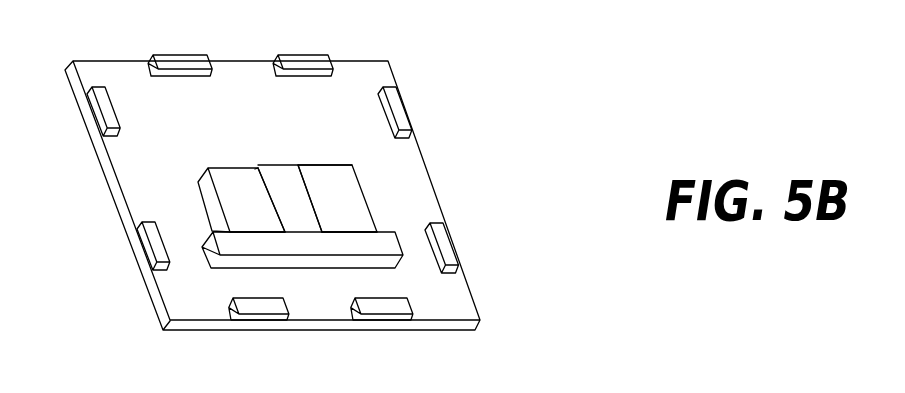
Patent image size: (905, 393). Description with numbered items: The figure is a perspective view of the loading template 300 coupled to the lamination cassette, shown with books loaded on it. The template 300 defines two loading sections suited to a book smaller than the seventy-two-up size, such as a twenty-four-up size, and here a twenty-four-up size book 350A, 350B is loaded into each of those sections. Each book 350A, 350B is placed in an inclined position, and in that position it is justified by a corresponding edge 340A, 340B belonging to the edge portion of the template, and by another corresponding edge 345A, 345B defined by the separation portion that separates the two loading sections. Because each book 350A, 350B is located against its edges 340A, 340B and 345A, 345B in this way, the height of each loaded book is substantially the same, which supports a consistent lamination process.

The loading template 300 is at (380, 243).
The book 350A is at (350, 192).
The book 350B is at (230, 190).
The edge 345A is at (303, 180).
The edge 345B is at (262, 180).
The edge 340A is at (362, 233).
The edge 340B is at (253, 233).